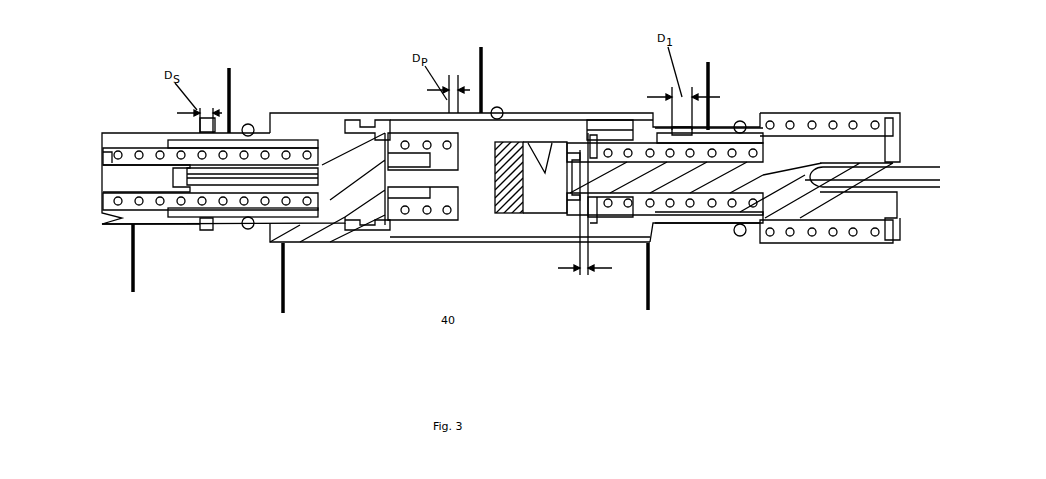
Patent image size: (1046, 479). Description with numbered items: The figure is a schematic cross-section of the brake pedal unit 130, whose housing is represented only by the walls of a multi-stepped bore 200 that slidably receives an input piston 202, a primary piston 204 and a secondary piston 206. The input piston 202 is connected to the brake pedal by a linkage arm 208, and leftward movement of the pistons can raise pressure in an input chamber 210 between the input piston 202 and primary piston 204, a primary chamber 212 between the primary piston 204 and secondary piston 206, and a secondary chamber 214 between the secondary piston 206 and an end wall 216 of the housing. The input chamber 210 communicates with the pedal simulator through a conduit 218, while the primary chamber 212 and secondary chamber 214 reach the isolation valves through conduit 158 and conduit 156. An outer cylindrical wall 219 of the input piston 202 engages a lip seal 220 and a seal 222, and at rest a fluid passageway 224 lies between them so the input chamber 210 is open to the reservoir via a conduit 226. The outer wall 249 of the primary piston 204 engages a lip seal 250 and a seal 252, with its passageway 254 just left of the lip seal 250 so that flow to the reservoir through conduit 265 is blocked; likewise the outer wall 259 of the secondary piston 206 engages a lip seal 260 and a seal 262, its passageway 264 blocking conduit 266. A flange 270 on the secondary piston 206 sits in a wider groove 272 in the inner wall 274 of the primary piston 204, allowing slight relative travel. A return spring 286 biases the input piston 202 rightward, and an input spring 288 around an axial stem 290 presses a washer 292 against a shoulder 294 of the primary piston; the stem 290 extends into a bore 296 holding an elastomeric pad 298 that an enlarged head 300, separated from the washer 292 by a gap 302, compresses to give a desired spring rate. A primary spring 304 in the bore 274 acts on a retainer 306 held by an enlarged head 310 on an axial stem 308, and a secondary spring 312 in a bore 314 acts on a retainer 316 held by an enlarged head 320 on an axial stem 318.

The brake pedal unit 130 is at (903, 73).
The conduit 156 is at (131, 263).
The conduit 158 is at (280, 297).
The multi-stepped bore 200 is at (857, 236).
The input piston 202 is at (860, 150).
The primary piston 204 is at (525, 243).
The secondary piston 206 is at (328, 244).
The linkage arm 208 is at (903, 180).
The input chamber 210 is at (633, 120).
The primary chamber 212 is at (320, 127).
The secondary chamber 214 is at (125, 143).
The end wall 216 is at (118, 222).
The conduit 218 is at (649, 287).
The outer cylindrical wall 219 is at (799, 218).
The lip seal 220 is at (673, 125).
The seal 222 is at (746, 124).
The fluid passageway 224 is at (696, 135).
The conduit 226 is at (710, 63).
The outer wall 249 is at (575, 112).
The lip seal 250 is at (455, 75).
The seal 252 is at (499, 107).
The passageway 254 is at (448, 132).
The outer wall 259 is at (290, 219).
The lip seal 260 is at (206, 108).
The seal 262 is at (250, 124).
The passageway 264 is at (195, 132).
The conduit 265 is at (483, 63).
The conduit 266 is at (227, 67).
The outwardly extending flange 270 is at (378, 128).
The groove 272 is at (365, 232).
The inner wall 274 is at (437, 212).
The return spring 286 is at (768, 238).
The input spring 288 is at (688, 196).
The axial stem 290 is at (652, 226).
The washer 292 is at (632, 240).
The shoulder 294 is at (610, 130).
The bore 296 is at (551, 142).
The elastomeric pad 298 is at (512, 214).
The enlarged head 300 is at (574, 212).
The gap 302 is at (585, 244).
The primary spring 304 is at (430, 226).
The retainer 306 is at (420, 192).
The axial stem 308 is at (455, 217).
The enlarged head 310 is at (430, 194).
The secondary spring 312 is at (186, 218).
The bore 314 is at (228, 205).
The retainer 316 is at (118, 190).
The axial stem 318 is at (272, 160).
The enlarged head 320 is at (172, 222).